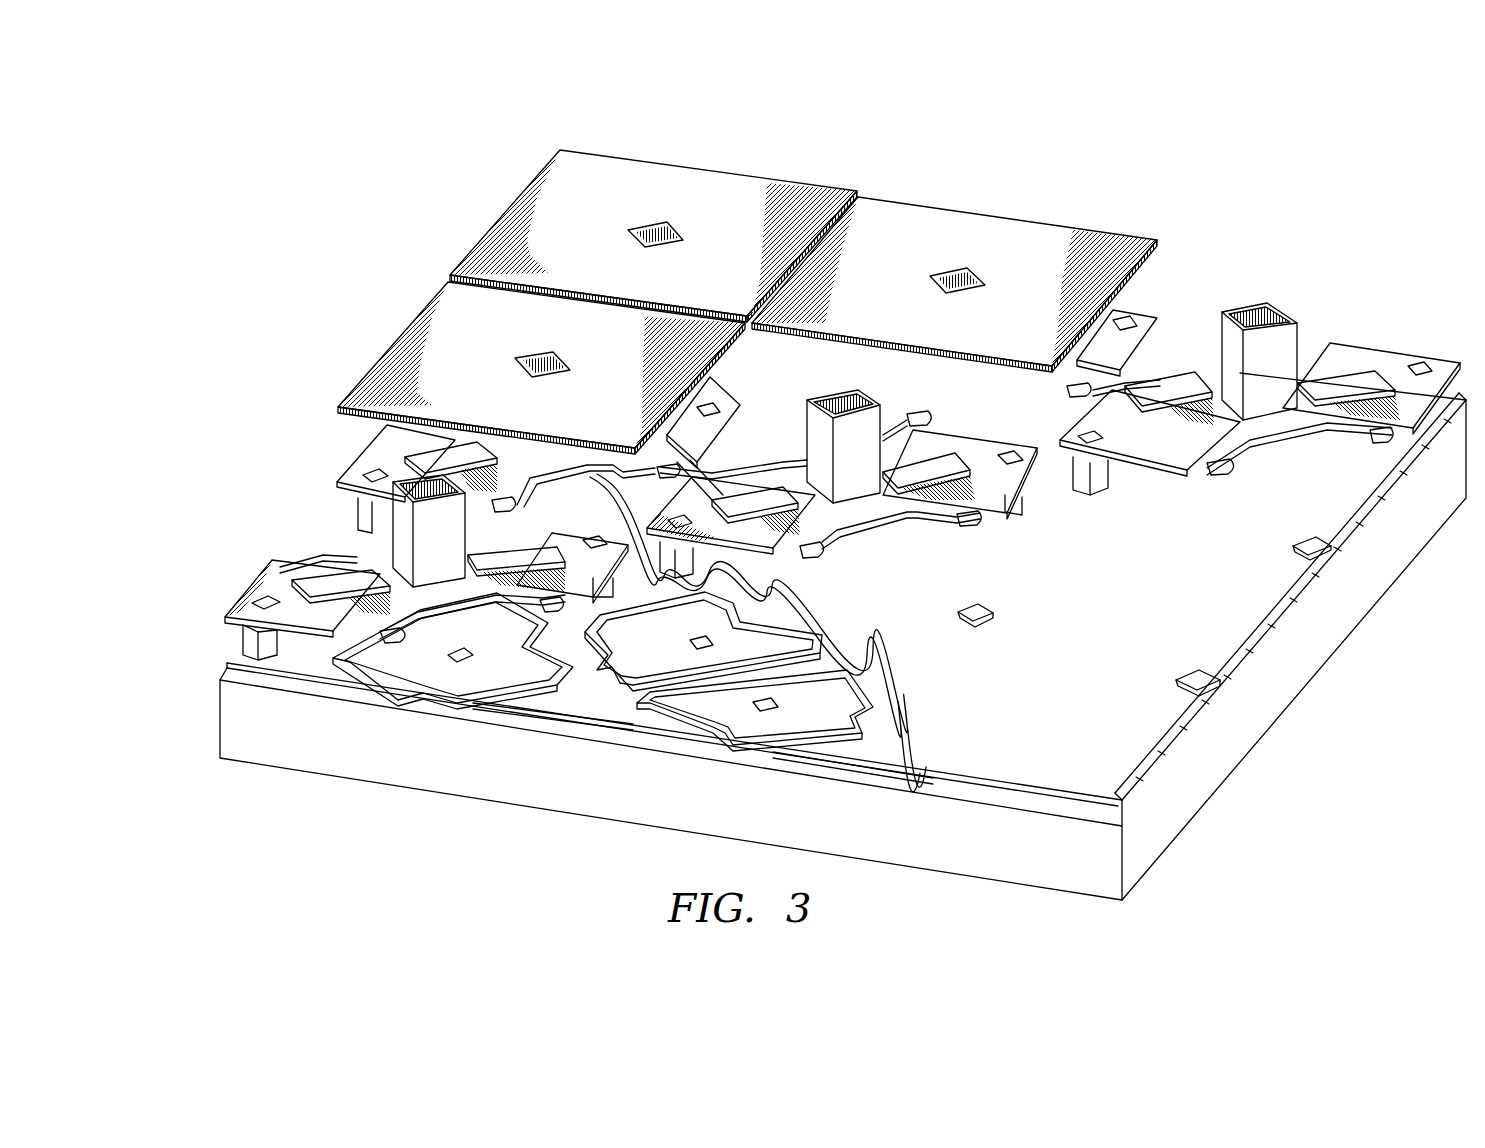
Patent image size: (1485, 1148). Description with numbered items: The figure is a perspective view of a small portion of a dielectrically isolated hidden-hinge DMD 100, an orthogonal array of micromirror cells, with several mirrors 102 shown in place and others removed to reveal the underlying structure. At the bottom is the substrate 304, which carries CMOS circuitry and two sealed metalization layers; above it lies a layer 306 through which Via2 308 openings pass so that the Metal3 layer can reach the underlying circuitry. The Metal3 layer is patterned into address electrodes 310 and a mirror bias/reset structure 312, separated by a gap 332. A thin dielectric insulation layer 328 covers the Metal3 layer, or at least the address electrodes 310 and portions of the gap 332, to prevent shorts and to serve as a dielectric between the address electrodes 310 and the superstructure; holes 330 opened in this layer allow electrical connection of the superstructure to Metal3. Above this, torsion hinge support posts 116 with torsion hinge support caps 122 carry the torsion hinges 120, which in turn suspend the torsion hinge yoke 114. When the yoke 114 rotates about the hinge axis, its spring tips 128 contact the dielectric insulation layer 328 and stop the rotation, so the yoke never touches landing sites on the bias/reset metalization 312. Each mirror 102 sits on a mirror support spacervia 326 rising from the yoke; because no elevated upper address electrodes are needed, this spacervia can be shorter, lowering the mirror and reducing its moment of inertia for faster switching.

The hidden-hinge DMD 100 is at (880, 172).
The mirror 102 is at (697, 180).
The torsion hinge yoke 114 is at (1170, 393).
The torsion hinge support post 116 is at (248, 636).
The torsion hinge 120 is at (353, 557).
The torsion hinge support cap 122 is at (258, 587).
The spring tip 128 is at (825, 548).
The substrate 304 is at (370, 768).
The insulating layer 306 is at (227, 683).
The Via2 308 is at (460, 650).
The address electrode 310 is at (365, 660).
The mirror bias/reset structure 312 is at (553, 705).
The mirror support spacervia 326 is at (398, 507).
The dielectric insulation layer 328 is at (1118, 778).
The hole 330 is at (977, 612).
The gap 332 is at (688, 712).